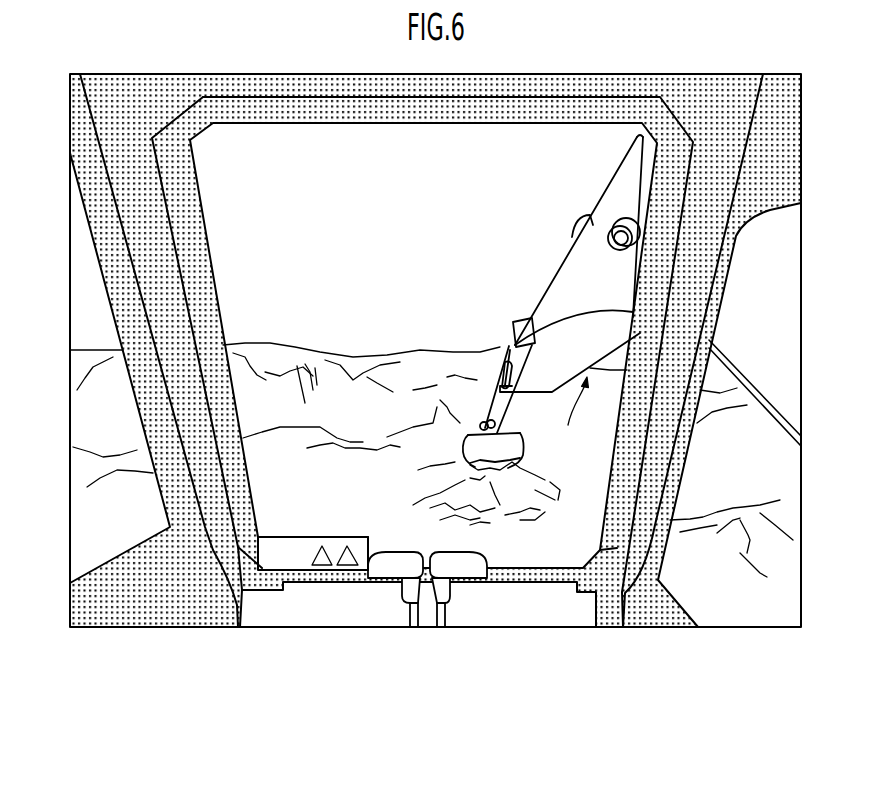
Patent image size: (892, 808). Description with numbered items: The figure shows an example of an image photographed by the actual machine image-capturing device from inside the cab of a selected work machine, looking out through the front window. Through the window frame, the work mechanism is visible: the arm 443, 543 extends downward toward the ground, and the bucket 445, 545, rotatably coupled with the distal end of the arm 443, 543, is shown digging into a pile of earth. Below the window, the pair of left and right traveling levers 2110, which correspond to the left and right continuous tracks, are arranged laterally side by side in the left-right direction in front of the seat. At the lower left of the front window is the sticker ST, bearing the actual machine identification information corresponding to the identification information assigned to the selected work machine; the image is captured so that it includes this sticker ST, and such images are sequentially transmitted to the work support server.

The arm 443 is at (487, 367).
The arm 543 is at (437, 337).
The bucket 445 is at (470, 426).
The bucket 545 is at (441, 386).
The traveling levers 2110 is at (391, 547).
The sticker ST is at (327, 570).